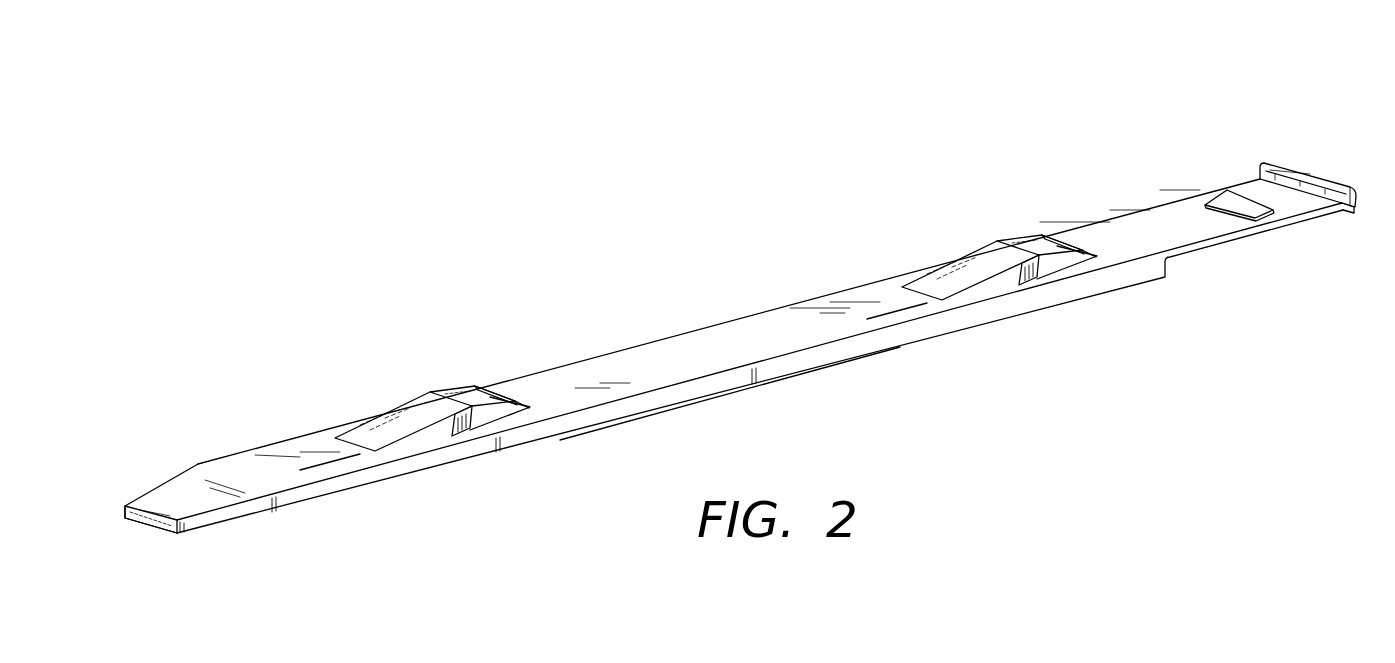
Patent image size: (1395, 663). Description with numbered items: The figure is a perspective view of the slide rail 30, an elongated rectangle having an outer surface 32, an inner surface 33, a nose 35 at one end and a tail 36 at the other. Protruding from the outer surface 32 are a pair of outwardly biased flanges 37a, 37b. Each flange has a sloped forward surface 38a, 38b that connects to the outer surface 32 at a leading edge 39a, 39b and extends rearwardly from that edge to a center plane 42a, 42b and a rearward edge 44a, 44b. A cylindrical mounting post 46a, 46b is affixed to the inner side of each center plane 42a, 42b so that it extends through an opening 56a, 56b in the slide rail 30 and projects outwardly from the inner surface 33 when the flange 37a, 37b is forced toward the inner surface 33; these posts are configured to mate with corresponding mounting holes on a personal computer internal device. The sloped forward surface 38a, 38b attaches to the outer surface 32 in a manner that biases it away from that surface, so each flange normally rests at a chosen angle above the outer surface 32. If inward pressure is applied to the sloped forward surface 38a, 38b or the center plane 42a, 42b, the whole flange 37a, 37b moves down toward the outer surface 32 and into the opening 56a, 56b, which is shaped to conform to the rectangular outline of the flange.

The slide rail 30 is at (707, 107).
The outer surface 32 is at (1177, 208).
The inner surface 33 is at (732, 394).
The nose 35 is at (160, 453).
The tail 36 is at (1303, 155).
The outwardly biased flange 37a is at (378, 372).
The outwardly biased flange 37b is at (977, 188).
The sloped forward surface 38a is at (372, 435).
The sloped forward surface 38b is at (940, 278).
The leading edge 39a is at (357, 447).
The leading edge 39b is at (927, 295).
The center plane 42a is at (443, 390).
The center plane 42b is at (1015, 230).
The rearward edge 44a is at (455, 388).
The rearward edge 44b is at (1053, 235).
The cylindrical mounting post 46a is at (463, 434).
The cylindrical mounting post 46b is at (1032, 270).
The opening 56a is at (512, 413).
The opening 56b is at (1063, 262).